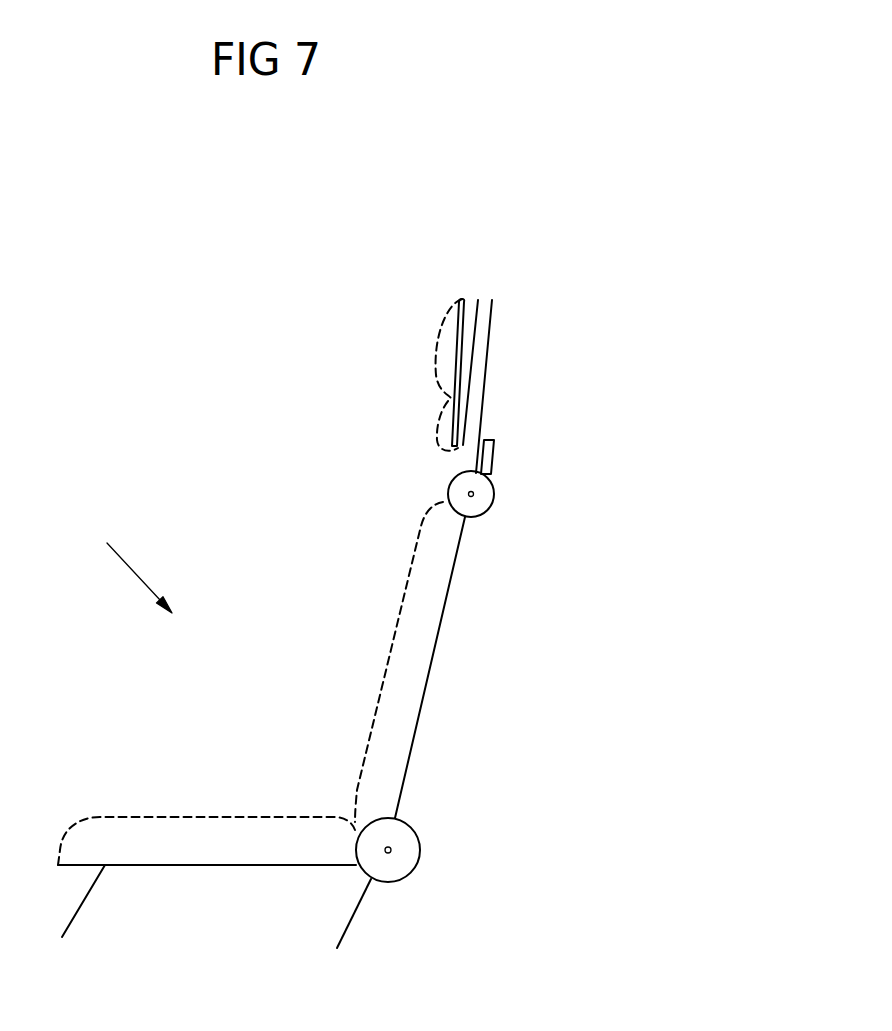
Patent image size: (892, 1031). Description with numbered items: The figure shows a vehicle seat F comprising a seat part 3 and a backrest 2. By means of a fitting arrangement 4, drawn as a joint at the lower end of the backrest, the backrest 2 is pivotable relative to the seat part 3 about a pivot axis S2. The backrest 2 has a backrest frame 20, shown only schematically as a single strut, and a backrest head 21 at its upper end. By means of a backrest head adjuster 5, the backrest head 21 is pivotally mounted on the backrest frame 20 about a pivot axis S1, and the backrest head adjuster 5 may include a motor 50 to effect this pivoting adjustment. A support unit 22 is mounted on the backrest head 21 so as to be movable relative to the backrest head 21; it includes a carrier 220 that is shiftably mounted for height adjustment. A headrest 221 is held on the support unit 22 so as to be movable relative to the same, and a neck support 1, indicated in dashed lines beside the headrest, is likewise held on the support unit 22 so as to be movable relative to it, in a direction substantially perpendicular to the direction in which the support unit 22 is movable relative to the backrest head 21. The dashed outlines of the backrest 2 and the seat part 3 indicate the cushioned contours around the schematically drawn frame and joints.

The neck support 1 is at (452, 422).
The backrest 2 is at (355, 622).
The seat part 3 is at (126, 790).
The fitting arrangement 4 is at (407, 878).
The backrest head adjuster 5 is at (487, 513).
The backrest frame 20 is at (430, 672).
The backrest head 21 is at (485, 368).
The support unit 22 is at (489, 265).
The carrier 220 is at (478, 327).
The headrest 221 is at (458, 351).
The motor 50 is at (495, 453).
The pivot axis S1 is at (472, 493).
The pivot axis S2 is at (388, 850).
The vehicle seat F is at (132, 566).